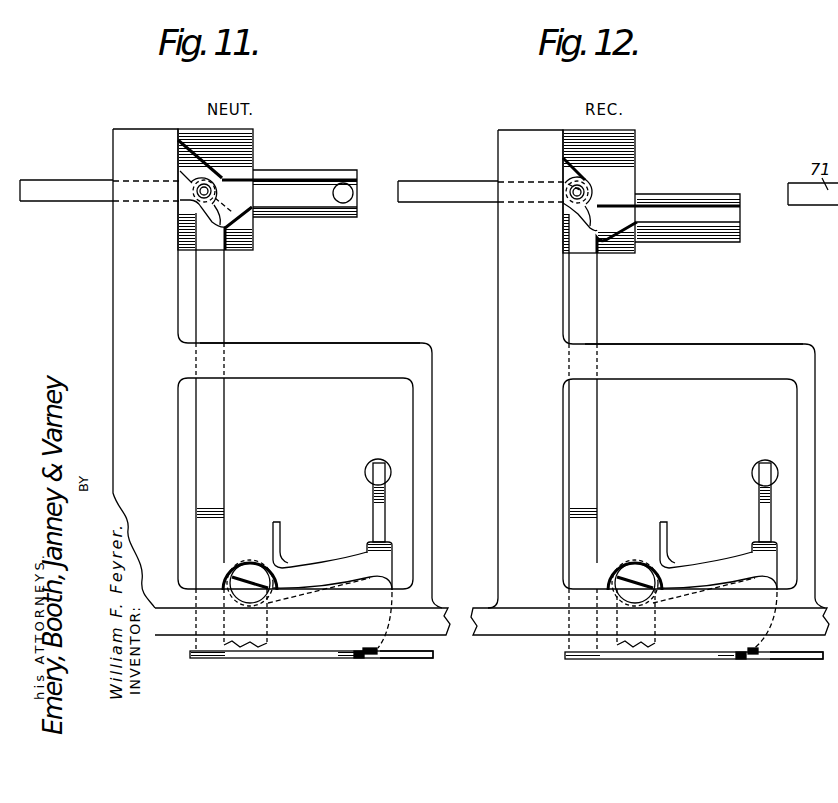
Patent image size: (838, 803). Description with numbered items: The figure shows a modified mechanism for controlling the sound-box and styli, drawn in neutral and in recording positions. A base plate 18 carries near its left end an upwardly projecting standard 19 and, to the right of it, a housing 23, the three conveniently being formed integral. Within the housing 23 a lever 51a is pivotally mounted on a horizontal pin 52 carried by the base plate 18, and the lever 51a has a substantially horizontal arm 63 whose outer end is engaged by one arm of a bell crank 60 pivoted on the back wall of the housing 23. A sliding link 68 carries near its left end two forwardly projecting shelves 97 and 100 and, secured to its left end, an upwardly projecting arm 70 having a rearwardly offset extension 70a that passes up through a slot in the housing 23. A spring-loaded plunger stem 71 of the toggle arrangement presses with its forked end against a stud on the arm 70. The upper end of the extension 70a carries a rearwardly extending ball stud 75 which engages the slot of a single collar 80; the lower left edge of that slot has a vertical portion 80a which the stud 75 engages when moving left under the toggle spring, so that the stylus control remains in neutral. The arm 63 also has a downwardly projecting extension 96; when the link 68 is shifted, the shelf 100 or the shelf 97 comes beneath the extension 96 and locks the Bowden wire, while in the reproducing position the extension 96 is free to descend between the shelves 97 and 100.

In FIG. 11, the base plate 18 is at (302, 621).
In FIG. 12, the base plate 18 is at (650, 621).
In FIG. 11, the standard 19 is at (277, 368).
In FIG. 12, the standard 19 is at (656, 369).
In FIG. 11, the housing 23 is at (310, 357).
In FIG. 12, the housing 23 is at (694, 358).
In FIG. 11, the lever 51a is at (282, 534).
In FIG. 12, the lever 51a is at (686, 539).
In FIG. 11, the pin 52 is at (250, 572).
In FIG. 12, the pin 52 is at (635, 584).
In FIG. 11, the bell crank 60 is at (378, 511).
In FIG. 12, the bell crank 60 is at (747, 506).
In FIG. 11, the arm 63 is at (318, 578).
In FIG. 12, the arm 63 is at (715, 571).
In FIG. 11, the link 68 is at (420, 658).
In FIG. 12, the link 68 is at (808, 659).
In FIG. 11, the arm 70 is at (210, 514).
In FIG. 12, the arm 70 is at (583, 514).
In FIG. 11, the extension 70a is at (208, 428).
In FIG. 12, the extension 70a is at (582, 432).
In FIG. 11, the plunger stem 71 is at (65, 186).
In FIG. 12, the plunger stem 71 is at (443, 188).
In FIG. 11, the ball stud 75 is at (232, 212).
In FIG. 12, the ball stud 75 is at (568, 184).
In FIG. 11, the collar 80 is at (303, 179).
In FIG. 12, the collar 80 is at (680, 199).
In FIG. 11, the vertical portion 80a is at (186, 197).
In FIG. 12, the vertical portion 80a is at (570, 212).
In FIG. 11, the extension 96 is at (373, 645).
In FIG. 12, the extension 96 is at (758, 646).
In FIG. 11, the shelf 97 is at (292, 654).
In FIG. 12, the shelf 97 is at (674, 655).
In FIG. 11, the shelf 100 is at (366, 656).
In FIG. 12, the shelf 100 is at (738, 658).